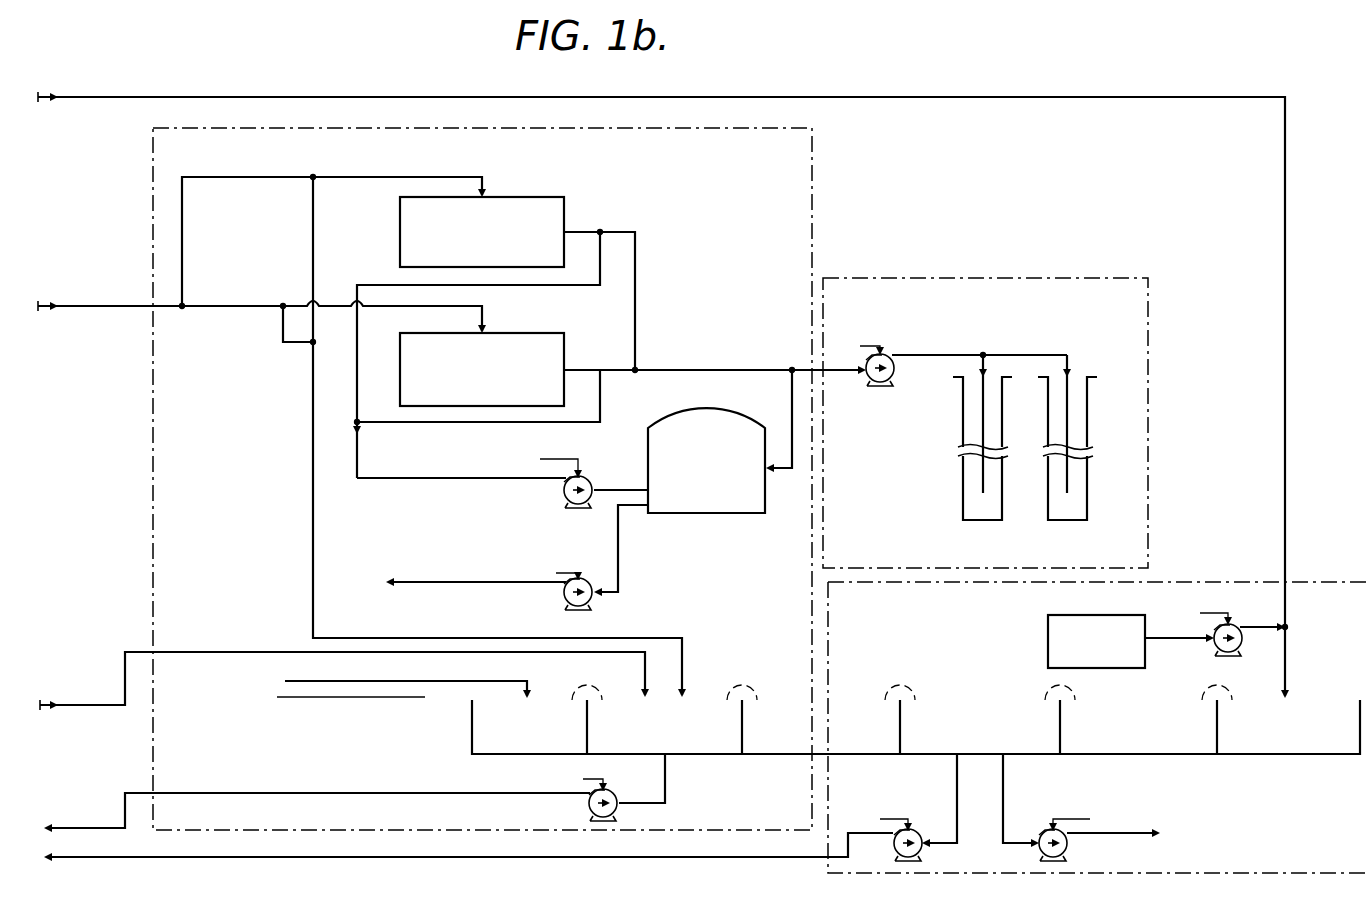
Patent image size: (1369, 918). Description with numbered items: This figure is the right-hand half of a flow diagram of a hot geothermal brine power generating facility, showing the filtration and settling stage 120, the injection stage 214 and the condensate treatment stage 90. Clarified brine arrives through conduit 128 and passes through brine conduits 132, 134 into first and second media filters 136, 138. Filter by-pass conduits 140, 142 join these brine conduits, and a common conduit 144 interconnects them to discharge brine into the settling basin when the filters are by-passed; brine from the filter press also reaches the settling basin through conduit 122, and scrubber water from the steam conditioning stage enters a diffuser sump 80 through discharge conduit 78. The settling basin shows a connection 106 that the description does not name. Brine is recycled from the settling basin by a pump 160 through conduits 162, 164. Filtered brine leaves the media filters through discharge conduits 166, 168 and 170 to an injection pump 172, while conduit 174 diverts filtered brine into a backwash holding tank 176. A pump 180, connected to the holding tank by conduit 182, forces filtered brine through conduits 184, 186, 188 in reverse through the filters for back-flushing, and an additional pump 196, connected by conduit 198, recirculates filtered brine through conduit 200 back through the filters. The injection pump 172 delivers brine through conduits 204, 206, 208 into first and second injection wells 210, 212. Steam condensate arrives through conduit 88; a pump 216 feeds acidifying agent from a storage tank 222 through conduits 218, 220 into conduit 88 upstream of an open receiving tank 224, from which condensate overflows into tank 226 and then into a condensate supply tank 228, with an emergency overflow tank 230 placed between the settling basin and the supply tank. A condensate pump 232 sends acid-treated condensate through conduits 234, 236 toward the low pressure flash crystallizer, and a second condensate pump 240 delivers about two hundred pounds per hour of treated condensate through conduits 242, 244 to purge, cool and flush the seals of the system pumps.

The discharge conduit 78 is at (488, 675).
The diffuser sump 80 is at (472, 742).
The condensate conduit 88 is at (105, 97).
The condensate treatment stage 90 is at (1315, 582).
The settling basin outlet 106 is at (718, 754).
The filtration and settling stage 120 is at (812, 181).
The conduit 122 is at (75, 706).
The brine conduit 128 is at (55, 306).
The brine conduit 132 is at (182, 215).
The brine conduit 134 is at (210, 306).
The first media filter 136 is at (522, 197).
The second media filter 138 is at (522, 333).
The filter by-pass conduit 140 is at (313, 252).
The filter by-pass conduit 142 is at (282, 342).
The common conduit 144 is at (313, 498).
The pump 160 is at (588, 806).
The conduit 162 is at (665, 790).
The conduit 164 is at (100, 816).
The discharge conduit 166 is at (636, 282).
The discharge conduit 168 is at (615, 368).
The discharge conduit 170 is at (719, 366).
The injection pump 172 is at (896, 376).
The conduit 174 is at (792, 392).
The backwash holding tank 176 is at (727, 513).
The pump 180 is at (562, 493).
The conduit 182 is at (630, 477).
The conduit 184 is at (428, 476).
The conduit 186 is at (381, 287).
The conduit 188 is at (462, 424).
The pump 196 is at (562, 596).
The conduit 198 is at (618, 574).
The conduit 200 is at (382, 582).
The conduit 204 is at (940, 355).
The conduit 206 is at (988, 370).
The conduit 208 is at (1072, 362).
The first injection well 210 is at (963, 502).
The second injection well 212 is at (1087, 502).
The injection stage 214 is at (992, 278).
The pump 216 is at (1240, 648).
The conduit 218 is at (1195, 641).
The conduit 220 is at (1254, 612).
The storage tank 222 is at (1048, 636).
The open receiving tank 224 is at (1318, 754).
The tank 226 is at (1190, 754).
The condensate supply tank 228 is at (1036, 754).
The emergency overflow tank 230 is at (866, 754).
The condensate pump 232 is at (922, 853).
The conduit 234 is at (957, 786).
The conduit 236 is at (95, 857).
The second condensate pump 240 is at (1067, 853).
The conduit 242 is at (1003, 790).
The conduit 244 is at (1152, 833).